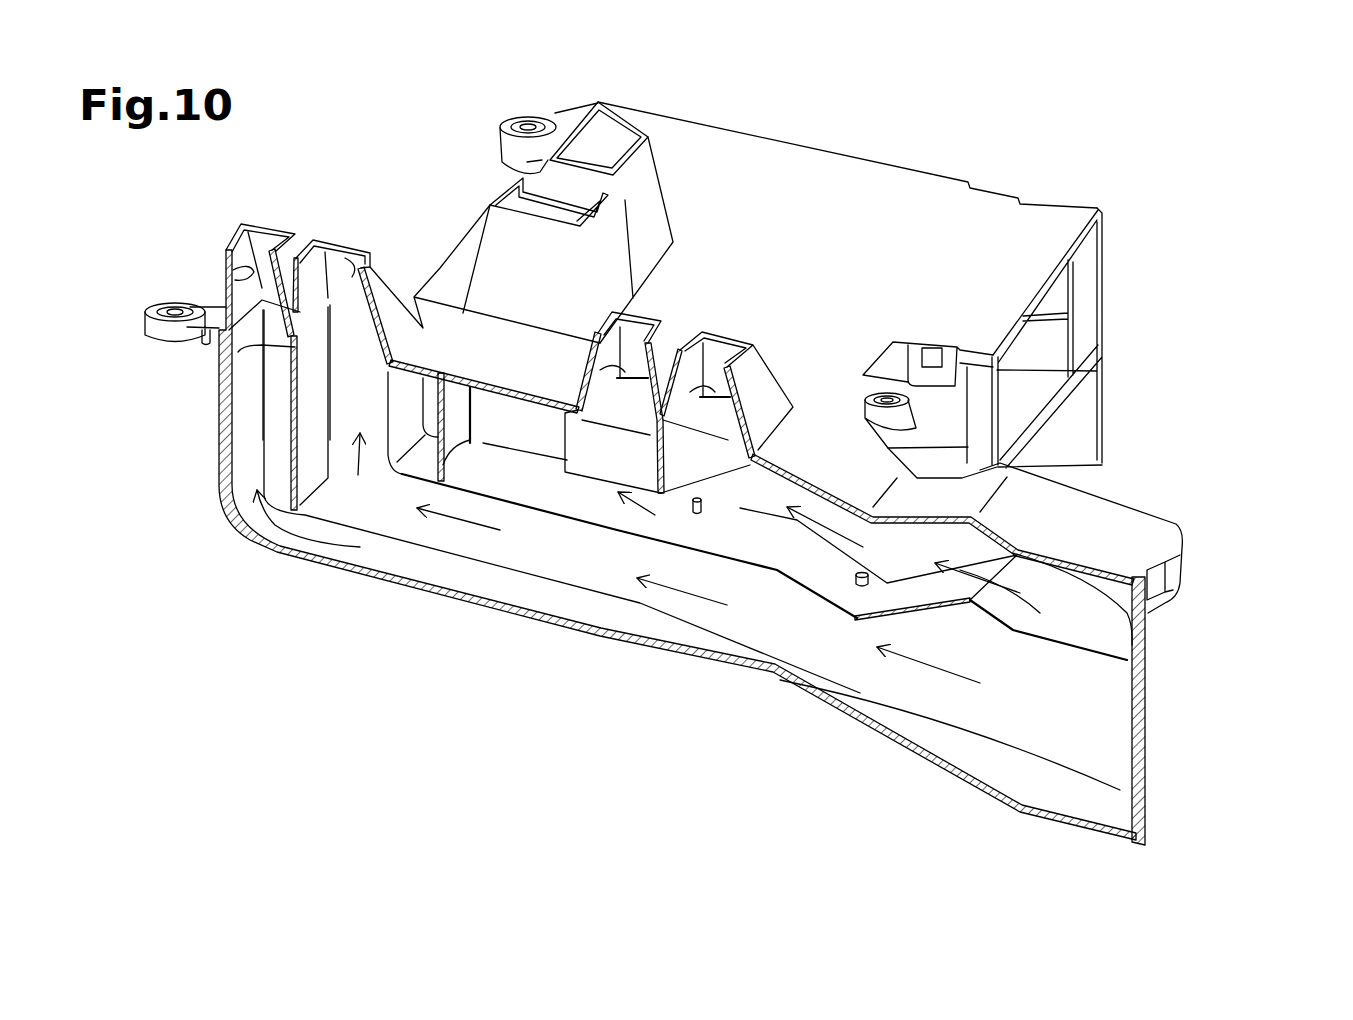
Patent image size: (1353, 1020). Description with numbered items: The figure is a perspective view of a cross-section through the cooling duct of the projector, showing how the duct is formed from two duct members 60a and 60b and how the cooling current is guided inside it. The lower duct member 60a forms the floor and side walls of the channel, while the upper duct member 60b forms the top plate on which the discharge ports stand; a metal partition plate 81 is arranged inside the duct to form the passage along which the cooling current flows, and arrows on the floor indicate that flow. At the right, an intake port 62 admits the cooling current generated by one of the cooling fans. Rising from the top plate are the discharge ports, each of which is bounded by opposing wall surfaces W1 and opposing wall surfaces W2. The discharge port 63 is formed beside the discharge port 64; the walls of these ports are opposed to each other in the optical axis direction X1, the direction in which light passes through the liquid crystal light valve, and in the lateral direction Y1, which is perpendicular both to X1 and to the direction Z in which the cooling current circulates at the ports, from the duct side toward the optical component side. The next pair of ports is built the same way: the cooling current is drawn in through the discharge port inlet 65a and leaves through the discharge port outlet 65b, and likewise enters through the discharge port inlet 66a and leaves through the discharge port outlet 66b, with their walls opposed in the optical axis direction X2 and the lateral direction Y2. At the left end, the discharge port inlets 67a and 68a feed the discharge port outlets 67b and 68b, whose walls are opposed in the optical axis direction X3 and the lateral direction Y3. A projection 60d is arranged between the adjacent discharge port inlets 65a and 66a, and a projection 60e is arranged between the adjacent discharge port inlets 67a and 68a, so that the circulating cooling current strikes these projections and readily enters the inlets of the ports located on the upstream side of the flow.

The duct member 60a is at (575, 618).
The duct member 60b is at (909, 182).
The projection 60d is at (672, 431).
The projection 60e is at (303, 493).
The intake port 62 is at (1083, 200).
The discharge port 63 is at (650, 130).
The discharge port 64 is at (486, 213).
The discharge port inlet 65a is at (710, 453).
The discharge port outlet 65b is at (717, 343).
The discharge port inlet 66a is at (617, 430).
The discharge port outlet 66b is at (618, 312).
The discharge port inlet 67a is at (238, 352).
The discharge port outlet 67b is at (256, 232).
The discharge port inlet 68a is at (390, 363).
The discharge port outlet 68b is at (348, 252).
The partition plate 81 is at (567, 517).
The opposing wall surfaces W1 is at (250, 268).
The opposing wall surfaces W2 is at (585, 152).
The optical axis direction X1 is at (520, 90).
The optical axis direction X2 is at (745, 288).
The optical axis direction X3 is at (358, 196).
The lateral direction Y1 is at (563, 316).
The lateral direction Y2 is at (747, 483).
The lateral direction Y3 is at (397, 387).
The direction Z is at (1234, 355).